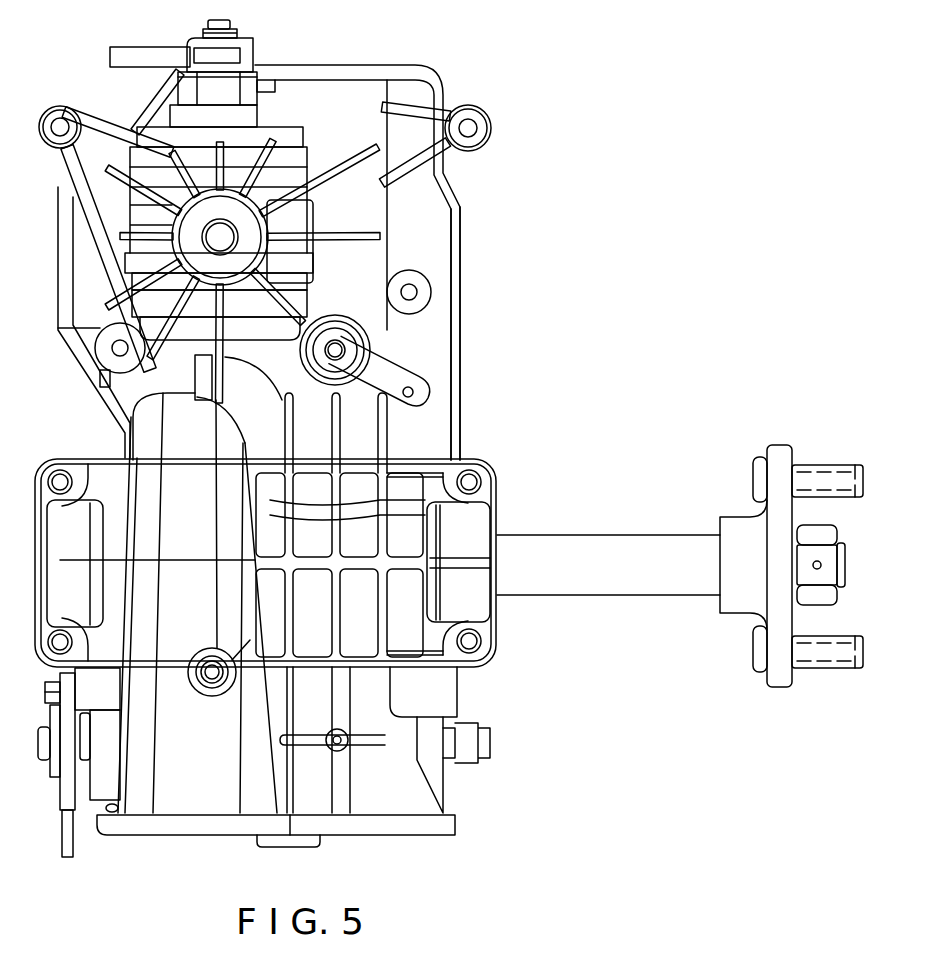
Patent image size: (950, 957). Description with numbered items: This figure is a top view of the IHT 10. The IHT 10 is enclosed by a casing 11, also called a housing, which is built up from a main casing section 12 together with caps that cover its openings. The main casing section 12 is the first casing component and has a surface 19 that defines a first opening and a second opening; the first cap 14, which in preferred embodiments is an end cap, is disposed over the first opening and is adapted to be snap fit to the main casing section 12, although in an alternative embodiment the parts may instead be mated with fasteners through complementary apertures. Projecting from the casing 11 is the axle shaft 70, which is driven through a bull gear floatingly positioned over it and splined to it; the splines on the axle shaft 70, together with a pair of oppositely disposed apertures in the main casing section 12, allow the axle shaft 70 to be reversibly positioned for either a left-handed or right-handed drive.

The IHT 10 is at (449, 442).
The casing 11 is at (536, 330).
The main casing section 12 is at (433, 248).
The first cap 14 is at (443, 830).
The surface 19 is at (458, 413).
The axle shaft 70 is at (623, 543).